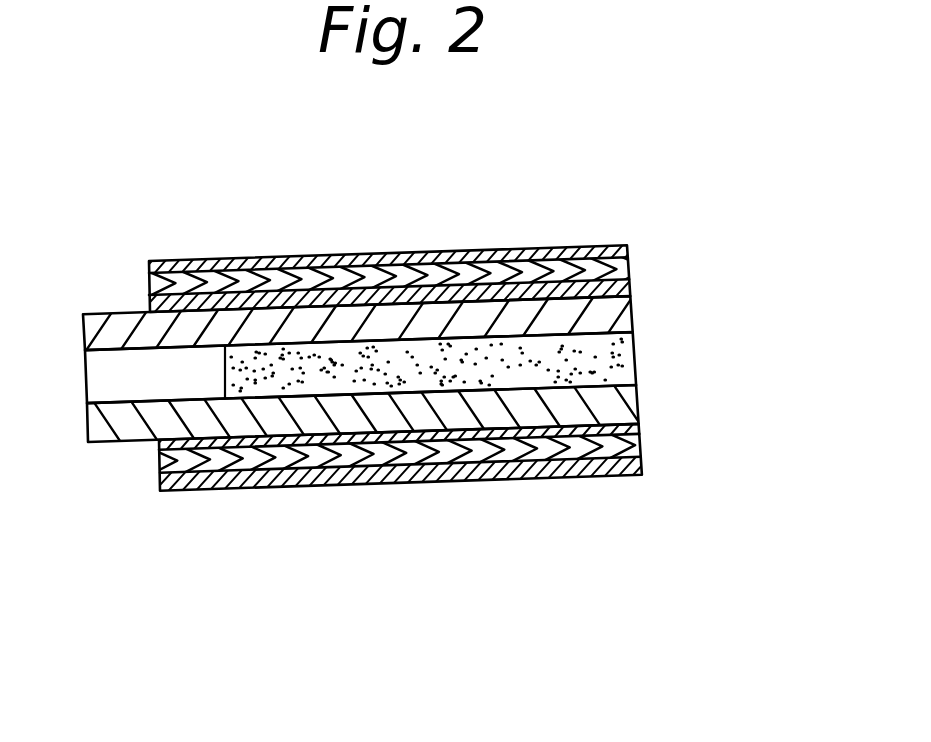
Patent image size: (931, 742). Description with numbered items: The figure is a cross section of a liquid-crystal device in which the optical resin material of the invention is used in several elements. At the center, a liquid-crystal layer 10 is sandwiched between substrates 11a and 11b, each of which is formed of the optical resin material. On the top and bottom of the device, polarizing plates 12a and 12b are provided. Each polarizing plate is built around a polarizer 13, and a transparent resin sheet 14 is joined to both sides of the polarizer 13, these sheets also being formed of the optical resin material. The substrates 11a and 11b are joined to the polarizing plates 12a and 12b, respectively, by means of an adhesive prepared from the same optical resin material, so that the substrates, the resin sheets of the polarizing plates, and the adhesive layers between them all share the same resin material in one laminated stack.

The liquid-crystal layer 10 is at (636, 357).
The substrate 11a is at (627, 316).
The substrate 11b is at (635, 402).
The polarizing plate 12a is at (752, 140).
The polarizing plate 12b is at (762, 438).
The polarizer 13 is at (627, 267).
The transparent resin sheet 14 is at (627, 247).